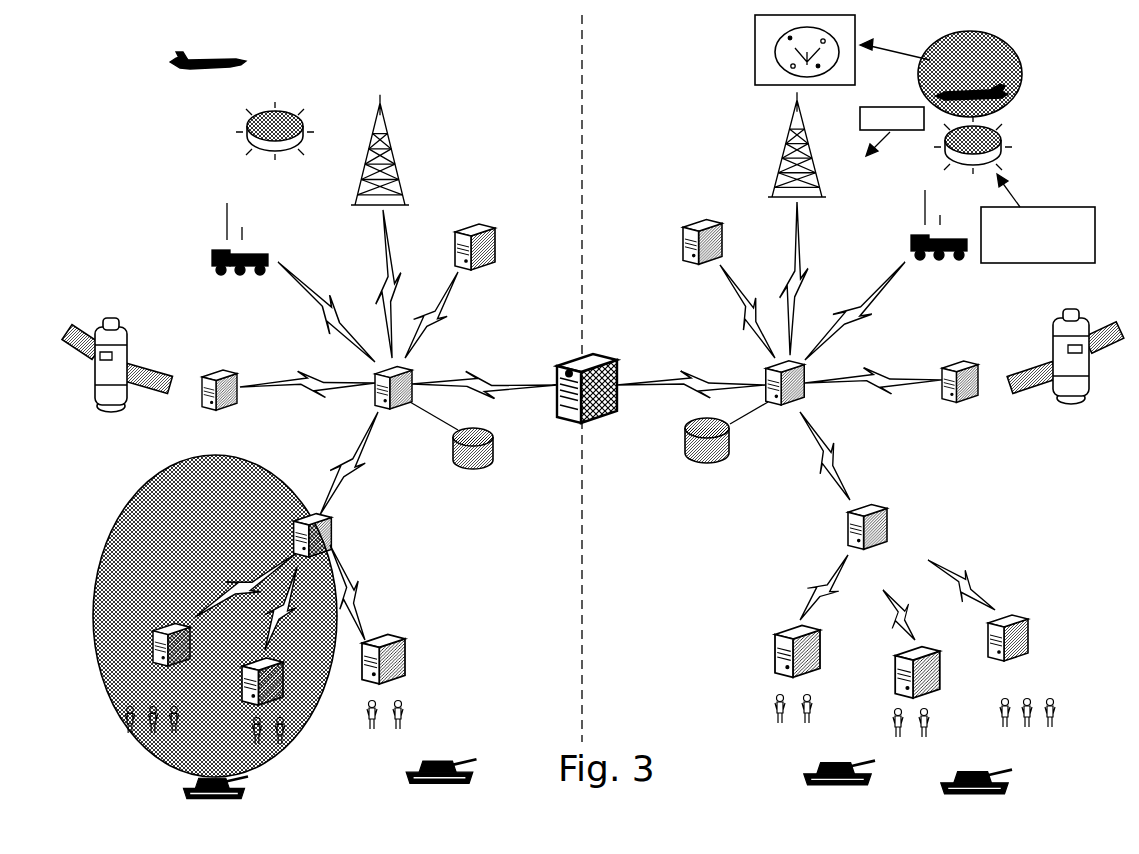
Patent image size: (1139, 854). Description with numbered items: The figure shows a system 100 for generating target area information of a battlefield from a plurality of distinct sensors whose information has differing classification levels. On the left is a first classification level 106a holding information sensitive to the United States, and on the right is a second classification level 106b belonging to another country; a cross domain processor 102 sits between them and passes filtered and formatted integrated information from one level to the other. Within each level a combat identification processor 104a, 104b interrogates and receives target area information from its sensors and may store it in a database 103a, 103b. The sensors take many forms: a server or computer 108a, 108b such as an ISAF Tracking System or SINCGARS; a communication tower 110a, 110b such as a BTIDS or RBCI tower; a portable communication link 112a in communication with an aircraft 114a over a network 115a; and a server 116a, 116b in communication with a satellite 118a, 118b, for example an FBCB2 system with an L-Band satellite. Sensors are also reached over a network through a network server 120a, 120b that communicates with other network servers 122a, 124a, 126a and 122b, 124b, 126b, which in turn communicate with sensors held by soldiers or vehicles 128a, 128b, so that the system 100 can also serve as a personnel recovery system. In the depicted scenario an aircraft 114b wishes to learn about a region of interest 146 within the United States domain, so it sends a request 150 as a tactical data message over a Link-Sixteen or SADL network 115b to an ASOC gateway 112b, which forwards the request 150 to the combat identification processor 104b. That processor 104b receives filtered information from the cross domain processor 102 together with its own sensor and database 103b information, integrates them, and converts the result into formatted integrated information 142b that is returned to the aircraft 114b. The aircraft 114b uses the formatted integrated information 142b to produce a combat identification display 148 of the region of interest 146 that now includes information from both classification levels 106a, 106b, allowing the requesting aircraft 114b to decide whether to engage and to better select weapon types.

The system 100 is at (621, 816).
The cross domain processor 102 is at (602, 423).
The database 103a is at (462, 470).
The database 103b is at (708, 468).
The combat identification processor 104a is at (390, 420).
The combat identification processor 104b is at (788, 413).
The first classification level 106a is at (502, 544).
The second classification level 106b is at (657, 551).
The server or computer 108a is at (493, 232).
The server or computer 108b is at (688, 223).
The communication tower 110a is at (393, 178).
The communication tower 110b is at (777, 167).
The portable communication link 112a is at (285, 238).
The ASOC gateway 112b is at (892, 230).
The aircraft 114a is at (270, 48).
The aircraft 114b is at (930, 90).
The network 115a is at (245, 142).
The LINK 16 or SADL network 115b is at (1012, 128).
The server 116a is at (227, 412).
The server 116b is at (955, 405).
The satellite 118a is at (125, 408).
The satellite 118b is at (1062, 400).
The network server 120a is at (297, 515).
The network server 120b is at (885, 512).
The network server 122a is at (155, 627).
The network server 122b is at (1020, 618).
The network server 124a is at (283, 678).
The network server 124b is at (897, 672).
The network server 126a is at (405, 658).
The network server 126b is at (777, 650).
The soldiers or vehicles 128a is at (152, 732).
The soldiers or vehicles 128b is at (1030, 730).
The formatted integrated information 142b is at (1065, 265).
The region of interest 146 is at (307, 730).
The combat identification display 148 is at (755, 62).
The request 150 is at (858, 112).